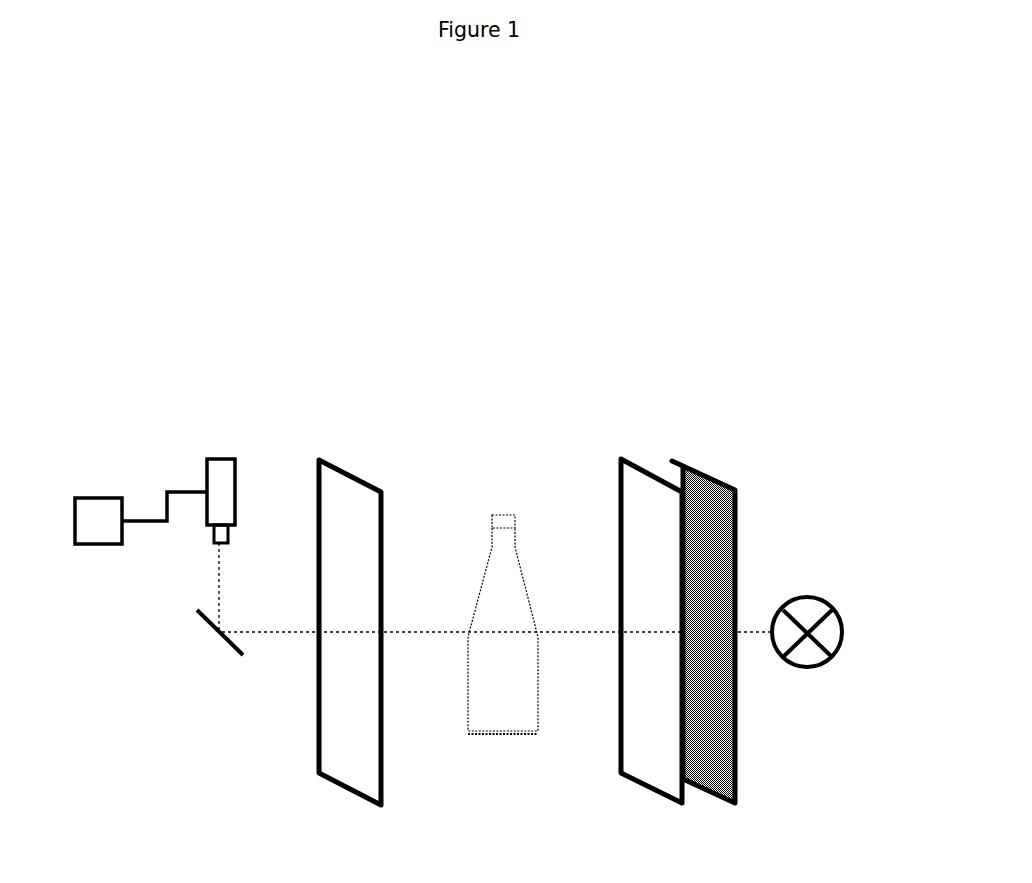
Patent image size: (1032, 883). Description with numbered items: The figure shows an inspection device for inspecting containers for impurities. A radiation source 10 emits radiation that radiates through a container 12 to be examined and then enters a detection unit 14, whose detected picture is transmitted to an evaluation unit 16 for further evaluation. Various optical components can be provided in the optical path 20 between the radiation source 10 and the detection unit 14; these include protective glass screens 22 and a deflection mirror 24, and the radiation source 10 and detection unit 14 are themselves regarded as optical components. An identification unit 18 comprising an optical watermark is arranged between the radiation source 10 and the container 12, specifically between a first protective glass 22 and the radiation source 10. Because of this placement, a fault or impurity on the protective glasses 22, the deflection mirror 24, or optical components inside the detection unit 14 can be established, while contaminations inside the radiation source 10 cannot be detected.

The radiation source 10 is at (807, 597).
The container 12 is at (500, 513).
The detection unit 14 is at (222, 459).
The evaluation unit 16 is at (83, 497).
The identification unit 18 is at (707, 475).
The optical path 20 is at (548, 630).
The protective glass screen 22 is at (350, 473).
The deflection mirror 24 is at (233, 653).